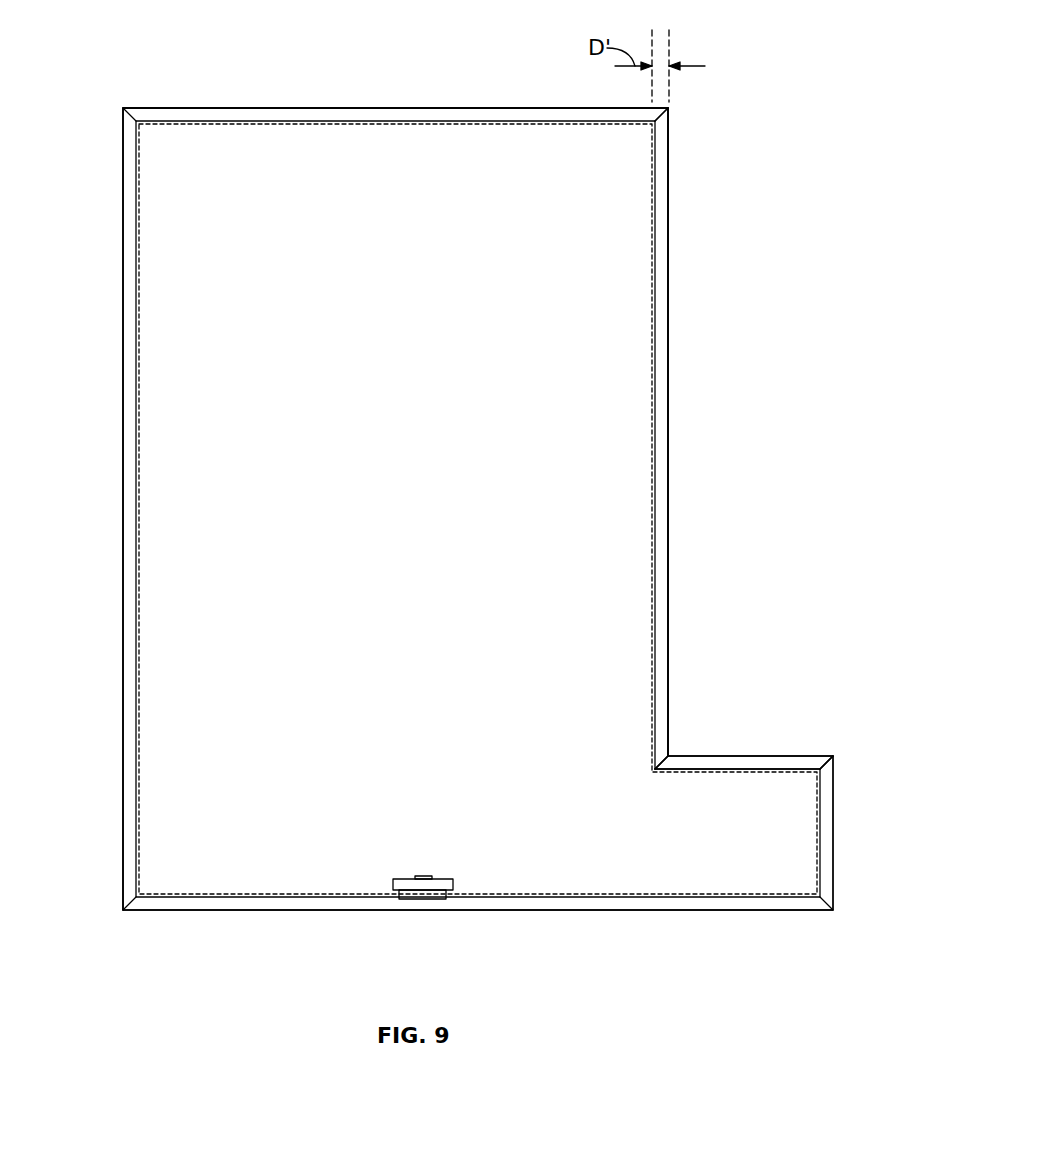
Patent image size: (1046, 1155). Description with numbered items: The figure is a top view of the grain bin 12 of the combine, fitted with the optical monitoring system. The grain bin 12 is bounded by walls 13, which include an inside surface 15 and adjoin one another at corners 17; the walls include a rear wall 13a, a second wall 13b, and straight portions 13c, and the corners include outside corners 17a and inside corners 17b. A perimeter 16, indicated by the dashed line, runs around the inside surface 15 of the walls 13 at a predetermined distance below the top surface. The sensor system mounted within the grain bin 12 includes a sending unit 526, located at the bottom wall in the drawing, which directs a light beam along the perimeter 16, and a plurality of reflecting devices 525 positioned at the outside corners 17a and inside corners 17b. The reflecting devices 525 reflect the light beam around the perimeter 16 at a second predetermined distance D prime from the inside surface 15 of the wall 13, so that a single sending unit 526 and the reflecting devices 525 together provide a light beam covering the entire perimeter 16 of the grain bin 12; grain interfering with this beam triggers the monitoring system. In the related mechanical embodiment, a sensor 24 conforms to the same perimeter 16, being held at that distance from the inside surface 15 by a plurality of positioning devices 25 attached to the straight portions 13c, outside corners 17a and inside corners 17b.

The grain bin 12 is at (226, 105).
The walls 13 is at (668, 368).
The rear wall 13a is at (430, 108).
The second wall 13b is at (123, 372).
The straight portions 13c is at (663, 511).
The inside surface 15 is at (666, 212).
The perimeter 16 is at (660, 283).
The corners 17 is at (672, 106).
The outside corners 17a is at (835, 758).
The inside corners 17b is at (670, 756).
The sensor 24 is at (652, 448).
The positioning devices 25 is at (668, 755).
The reflecting devices 525 is at (655, 770).
The sending unit 526 is at (412, 900).